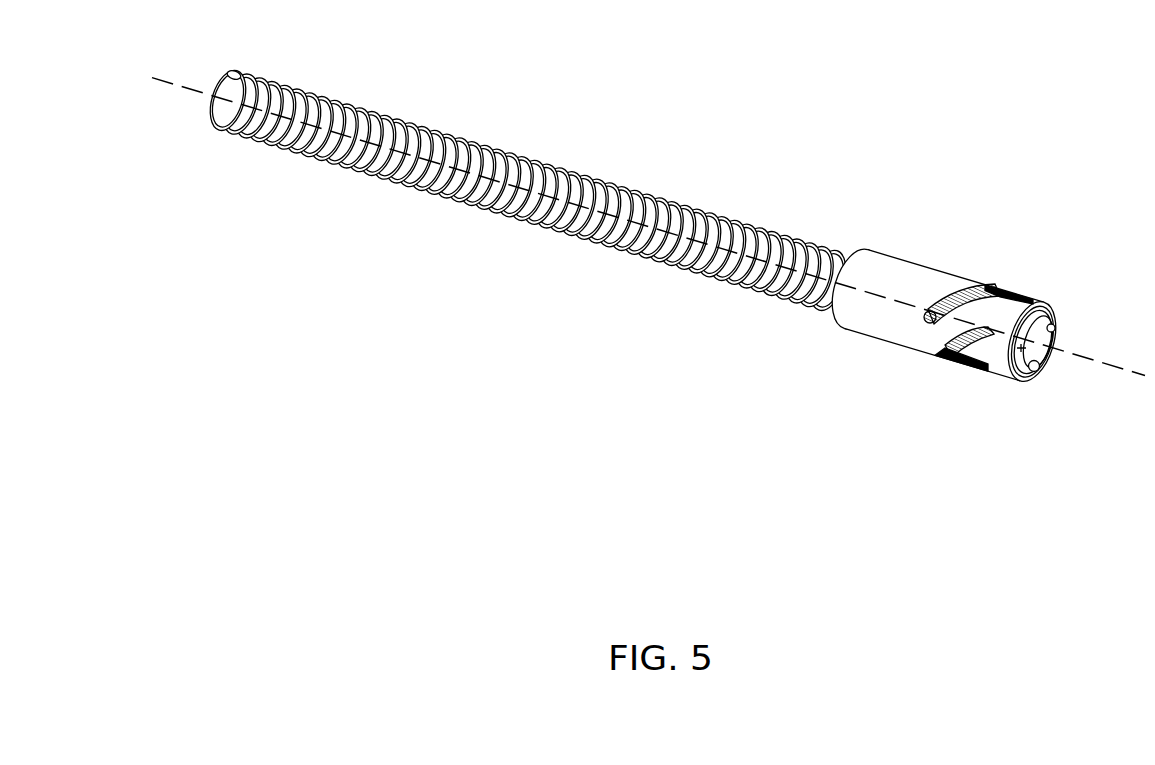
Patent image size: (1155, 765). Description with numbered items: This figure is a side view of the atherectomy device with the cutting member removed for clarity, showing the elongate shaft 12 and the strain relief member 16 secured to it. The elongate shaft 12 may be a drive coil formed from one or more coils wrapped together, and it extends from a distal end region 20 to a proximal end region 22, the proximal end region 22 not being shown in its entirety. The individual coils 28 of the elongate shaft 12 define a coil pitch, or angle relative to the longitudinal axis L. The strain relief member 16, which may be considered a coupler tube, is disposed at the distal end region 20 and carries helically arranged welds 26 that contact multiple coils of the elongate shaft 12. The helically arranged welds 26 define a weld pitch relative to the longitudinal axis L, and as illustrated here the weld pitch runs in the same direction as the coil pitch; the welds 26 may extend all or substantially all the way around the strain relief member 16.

The elongate shaft 12 is at (634, 243).
The proximal end region 22 is at (487, 190).
The individual coils 28 is at (497, 183).
The distal end region 20 is at (902, 320).
The strain relief member 16 is at (888, 268).
The helically arranged welds 26 is at (976, 283).
The longitudinal axis L is at (179, 87).